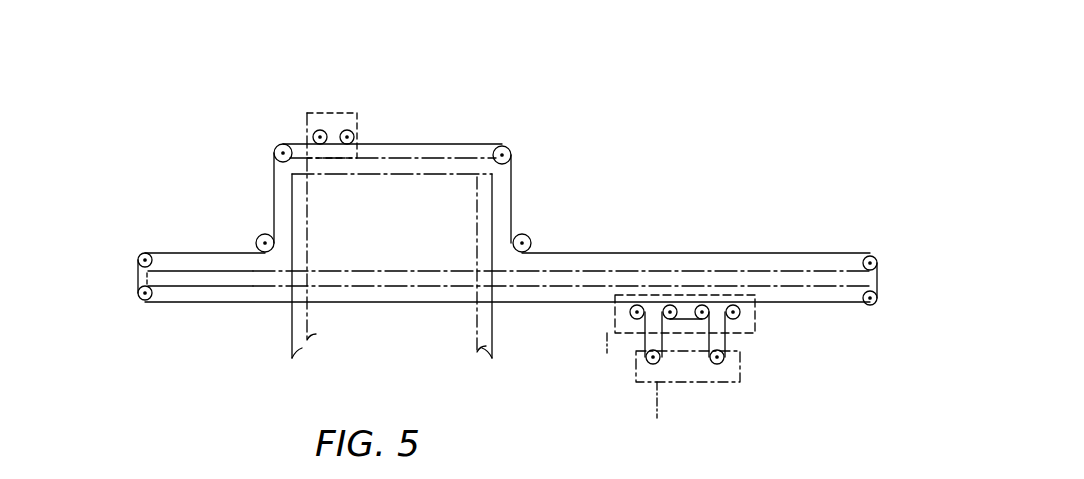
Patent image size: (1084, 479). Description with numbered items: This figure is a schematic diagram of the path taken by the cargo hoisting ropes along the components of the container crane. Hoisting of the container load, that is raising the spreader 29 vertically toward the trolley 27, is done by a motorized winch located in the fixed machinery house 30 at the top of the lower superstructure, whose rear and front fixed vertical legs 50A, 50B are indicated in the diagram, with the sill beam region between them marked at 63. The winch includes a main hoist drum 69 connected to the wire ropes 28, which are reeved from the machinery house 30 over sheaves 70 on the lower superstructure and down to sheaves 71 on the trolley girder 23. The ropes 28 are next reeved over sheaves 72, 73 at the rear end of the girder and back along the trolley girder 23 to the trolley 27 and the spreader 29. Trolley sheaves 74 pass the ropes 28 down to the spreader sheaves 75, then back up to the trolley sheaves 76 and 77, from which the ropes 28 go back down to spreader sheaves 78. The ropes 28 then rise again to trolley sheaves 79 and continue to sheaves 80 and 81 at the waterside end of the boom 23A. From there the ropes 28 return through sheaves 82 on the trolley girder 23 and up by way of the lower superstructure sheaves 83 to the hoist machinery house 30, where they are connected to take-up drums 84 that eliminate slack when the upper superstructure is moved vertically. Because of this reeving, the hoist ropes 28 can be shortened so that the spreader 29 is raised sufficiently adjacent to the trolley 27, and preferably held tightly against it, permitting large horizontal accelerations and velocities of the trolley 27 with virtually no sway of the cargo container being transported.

The trolley girder 23 is at (337, 276).
The boom 23A is at (707, 277).
The trolley 27 is at (606, 353).
The wire ropes 28 is at (442, 144).
The spreader 29 is at (657, 413).
The machinery house 30 is at (335, 113).
The rear fixed vertical leg 50A is at (301, 212).
The front fixed vertical leg 50B is at (472, 203).
The axis 63 is at (408, 165).
The main hoist drum 69 is at (316, 130).
The sheaves 70 is at (279, 146).
The sheaves 71 is at (261, 236).
The sheave 72 is at (138, 258).
The sheave 73 is at (140, 300).
The trolley sheaves 74 is at (630, 305).
The spreader sheaves 75 is at (660, 366).
The trolley sheaves 76 is at (668, 303).
The trolley sheaves 77 is at (700, 303).
The spreader sheaves 78 is at (722, 366).
The trolley sheaves 79 is at (743, 303).
The sheave 80 is at (873, 304).
The sheave 81 is at (870, 256).
The sheaves 82 is at (529, 236).
The lower superstructure sheaves 83 is at (509, 152).
The take-up drums 84 is at (356, 135).